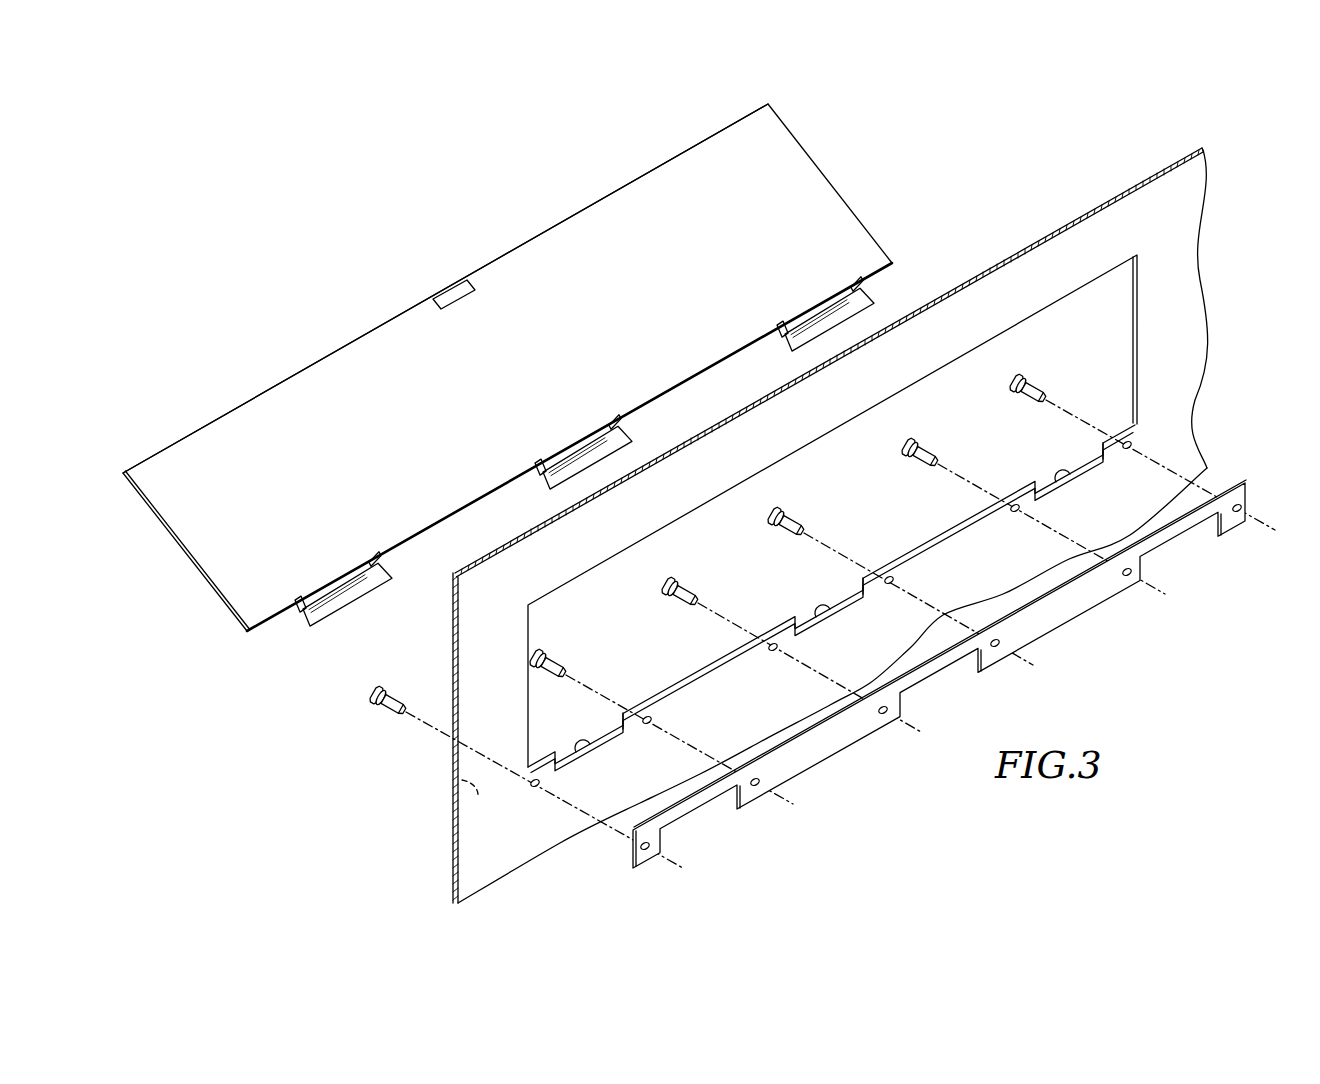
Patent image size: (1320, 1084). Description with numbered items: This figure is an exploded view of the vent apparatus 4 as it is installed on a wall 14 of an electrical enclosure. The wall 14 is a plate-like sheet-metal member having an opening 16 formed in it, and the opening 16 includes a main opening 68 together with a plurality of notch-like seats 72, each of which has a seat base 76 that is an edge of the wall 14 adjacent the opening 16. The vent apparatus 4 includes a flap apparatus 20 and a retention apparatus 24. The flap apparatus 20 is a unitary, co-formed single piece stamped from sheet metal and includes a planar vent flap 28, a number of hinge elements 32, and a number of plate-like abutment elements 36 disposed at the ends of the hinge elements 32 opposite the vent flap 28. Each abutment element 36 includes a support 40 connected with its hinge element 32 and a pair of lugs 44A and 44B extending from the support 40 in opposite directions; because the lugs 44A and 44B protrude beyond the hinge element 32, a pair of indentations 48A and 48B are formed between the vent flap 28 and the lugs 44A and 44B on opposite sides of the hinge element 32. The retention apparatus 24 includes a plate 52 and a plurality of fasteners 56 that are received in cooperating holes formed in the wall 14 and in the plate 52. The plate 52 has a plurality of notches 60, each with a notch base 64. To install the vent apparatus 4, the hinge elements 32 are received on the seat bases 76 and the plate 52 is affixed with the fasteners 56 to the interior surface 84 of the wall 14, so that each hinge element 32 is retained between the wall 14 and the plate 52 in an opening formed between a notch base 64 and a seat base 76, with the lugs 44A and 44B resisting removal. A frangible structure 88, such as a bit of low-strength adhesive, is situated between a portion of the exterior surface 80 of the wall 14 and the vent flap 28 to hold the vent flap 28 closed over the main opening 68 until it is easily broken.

The vent apparatus 4 is at (1100, 168).
The wall 14 is at (1190, 215).
The opening 16 is at (1137, 308).
The flap apparatus 20 is at (832, 162).
The retention apparatus 24 is at (606, 840).
The vent flap 28 is at (783, 109).
The hinge element 32 is at (333, 582).
The abutment element 36 is at (349, 618).
The support 40 is at (390, 588).
The lug 44A is at (299, 616).
The lug 44B is at (392, 570).
The indentation 48A is at (302, 602).
The indentation 48B is at (374, 563).
The plate 52 is at (1072, 622).
The fastener 56 is at (375, 702).
The notch 60 is at (738, 800).
The notch base 64 is at (676, 838).
The main opening 68 is at (1105, 340).
The seat 72 is at (620, 717).
The seat base 76 is at (585, 743).
The exterior surface 80 is at (455, 780).
The interior surface 84 is at (478, 828).
The frangible structure 88 is at (455, 292).